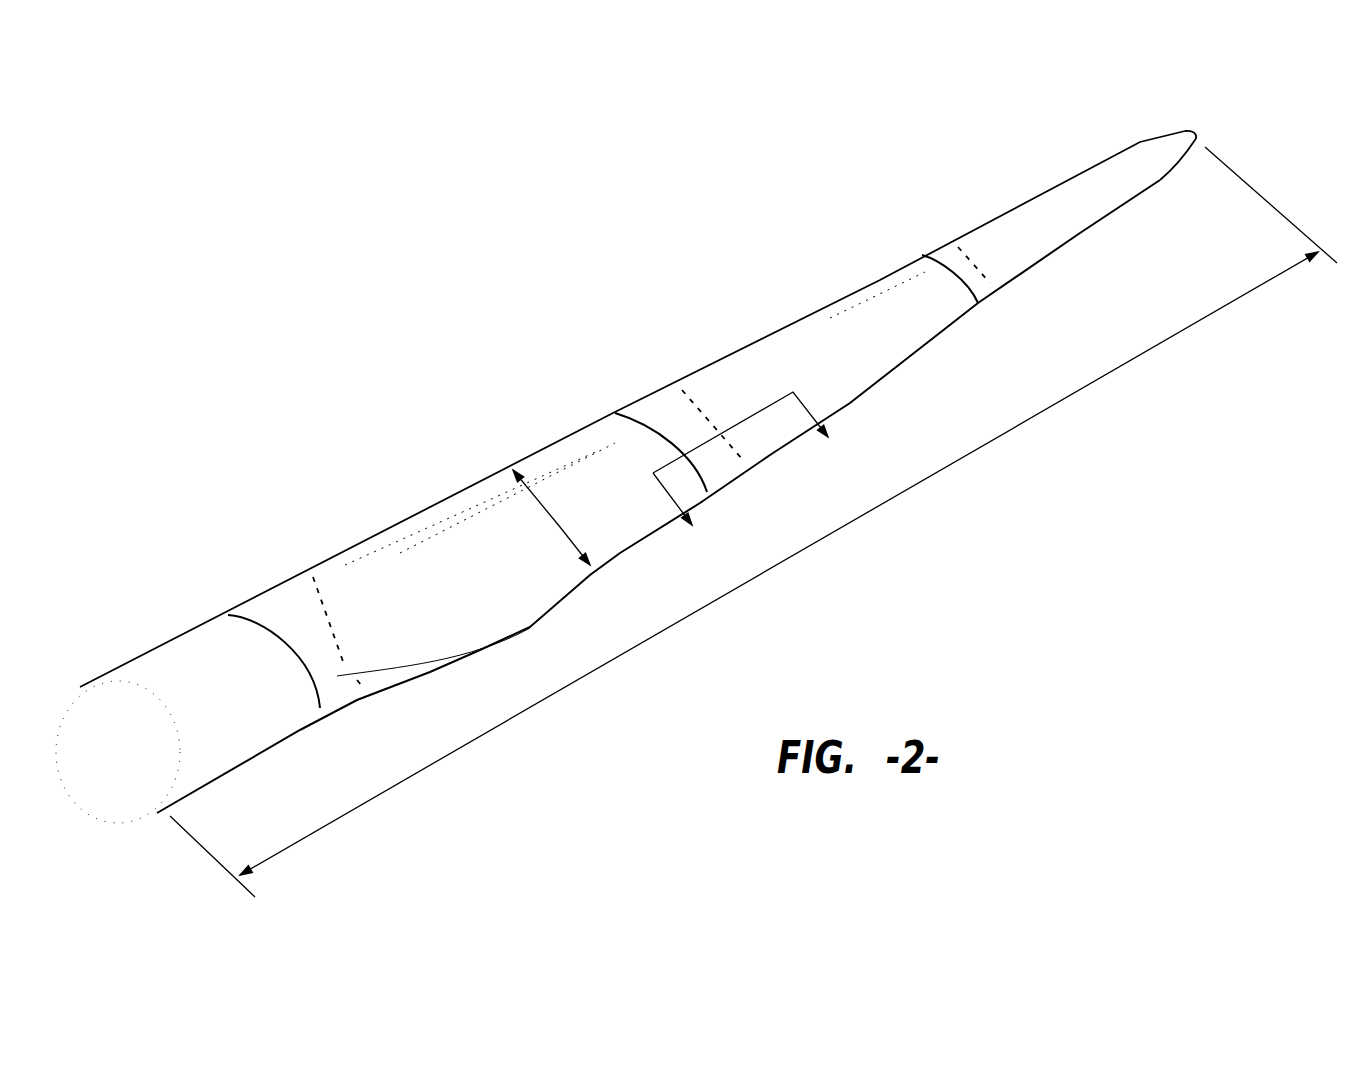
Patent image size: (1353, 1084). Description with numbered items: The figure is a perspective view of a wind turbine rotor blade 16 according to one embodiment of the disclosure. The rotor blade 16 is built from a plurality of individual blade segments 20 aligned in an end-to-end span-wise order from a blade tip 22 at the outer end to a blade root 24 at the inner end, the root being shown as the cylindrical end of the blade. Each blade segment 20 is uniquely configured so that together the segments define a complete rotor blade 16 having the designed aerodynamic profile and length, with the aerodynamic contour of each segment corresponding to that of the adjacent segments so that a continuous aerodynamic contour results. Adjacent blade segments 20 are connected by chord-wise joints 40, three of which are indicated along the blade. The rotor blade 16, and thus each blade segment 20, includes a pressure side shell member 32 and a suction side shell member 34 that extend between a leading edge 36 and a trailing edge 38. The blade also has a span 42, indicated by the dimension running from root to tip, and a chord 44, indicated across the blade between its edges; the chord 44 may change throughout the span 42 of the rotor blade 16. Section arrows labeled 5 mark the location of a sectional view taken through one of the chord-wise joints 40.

The rotor blade 16 is at (282, 397).
The blade segments 20 is at (468, 470).
The blade tip 22 is at (1207, 122).
The blade root 24 is at (133, 773).
The pressure side shell member 32 is at (227, 703).
The suction side shell member 34 is at (482, 600).
The leading edge 36 is at (427, 510).
The trailing edge 38 is at (547, 613).
The chord-wise joint 40 is at (282, 612).
The span 42 is at (955, 462).
The chord 44 is at (560, 527).
The section line 5- 5 is at (751, 476).